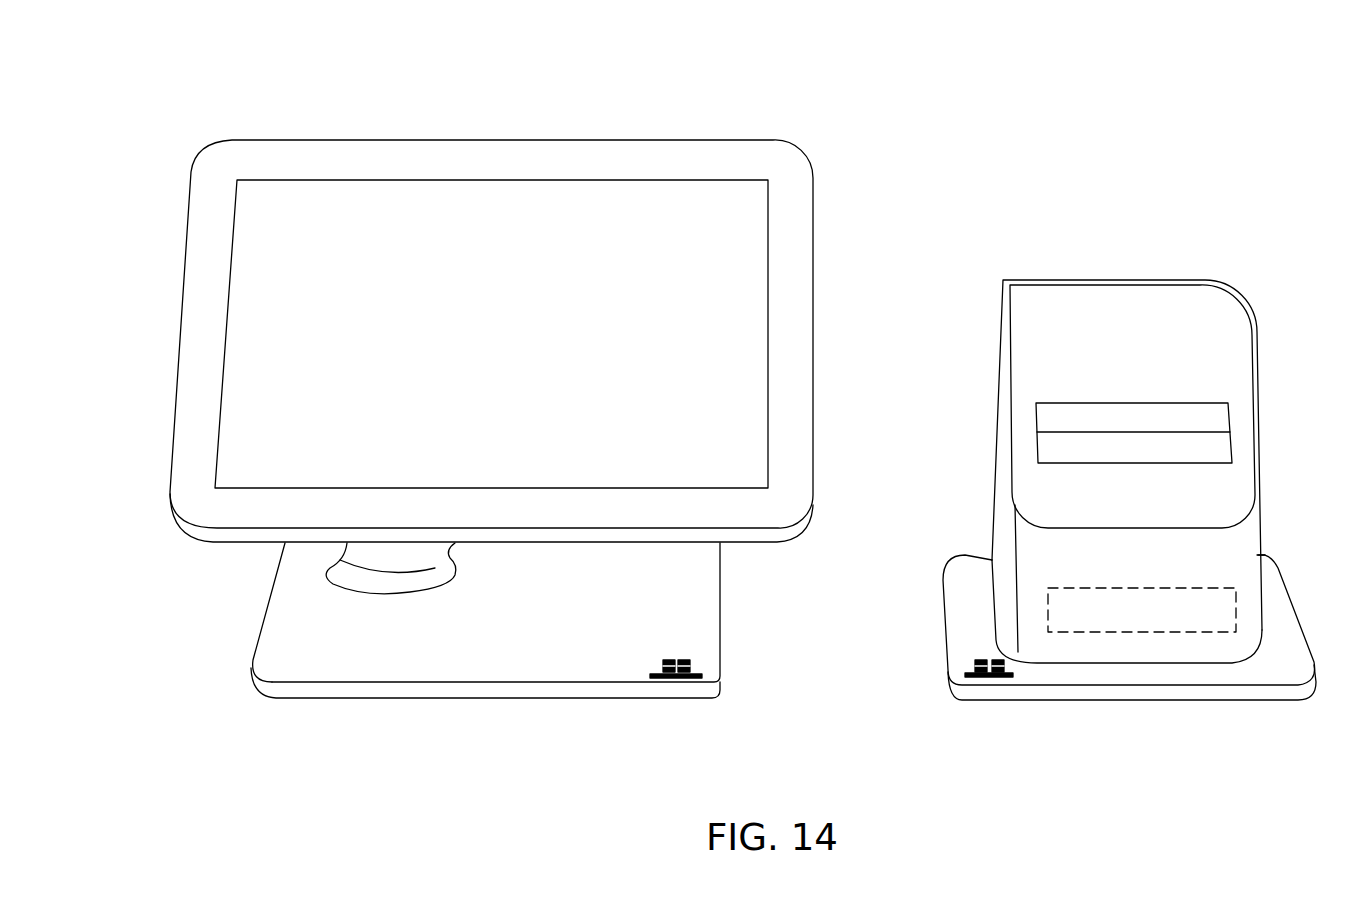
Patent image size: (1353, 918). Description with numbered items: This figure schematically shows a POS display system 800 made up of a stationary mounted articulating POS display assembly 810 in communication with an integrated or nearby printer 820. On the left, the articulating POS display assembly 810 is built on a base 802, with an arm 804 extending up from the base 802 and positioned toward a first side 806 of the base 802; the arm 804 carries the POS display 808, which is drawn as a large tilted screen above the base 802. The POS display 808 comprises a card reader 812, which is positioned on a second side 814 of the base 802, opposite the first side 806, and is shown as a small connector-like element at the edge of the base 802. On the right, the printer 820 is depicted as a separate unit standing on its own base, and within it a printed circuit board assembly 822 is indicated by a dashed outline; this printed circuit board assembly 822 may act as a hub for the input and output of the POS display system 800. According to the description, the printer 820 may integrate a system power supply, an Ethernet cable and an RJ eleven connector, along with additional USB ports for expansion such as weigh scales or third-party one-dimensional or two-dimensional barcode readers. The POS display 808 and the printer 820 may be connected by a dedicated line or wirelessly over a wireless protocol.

The POS display system 800 is at (1056, 98).
The base 802 is at (695, 611).
The arm 804 is at (437, 562).
The first side 806 is at (323, 718).
The POS display 808 is at (747, 366).
The stationary mounted articulating POS display assembly 810 is at (811, 121).
The card reader 812 is at (677, 682).
The second side 814 is at (558, 714).
The printer 820 is at (1252, 213).
The printed circuit board assembly 822 is at (1143, 612).